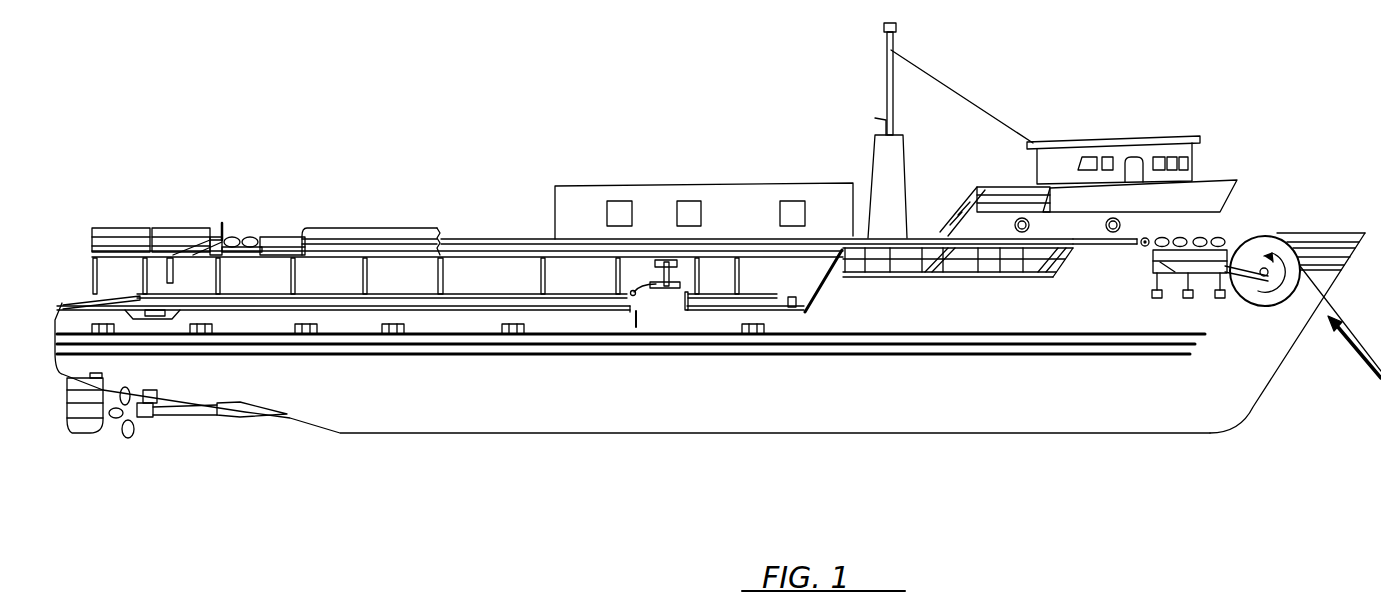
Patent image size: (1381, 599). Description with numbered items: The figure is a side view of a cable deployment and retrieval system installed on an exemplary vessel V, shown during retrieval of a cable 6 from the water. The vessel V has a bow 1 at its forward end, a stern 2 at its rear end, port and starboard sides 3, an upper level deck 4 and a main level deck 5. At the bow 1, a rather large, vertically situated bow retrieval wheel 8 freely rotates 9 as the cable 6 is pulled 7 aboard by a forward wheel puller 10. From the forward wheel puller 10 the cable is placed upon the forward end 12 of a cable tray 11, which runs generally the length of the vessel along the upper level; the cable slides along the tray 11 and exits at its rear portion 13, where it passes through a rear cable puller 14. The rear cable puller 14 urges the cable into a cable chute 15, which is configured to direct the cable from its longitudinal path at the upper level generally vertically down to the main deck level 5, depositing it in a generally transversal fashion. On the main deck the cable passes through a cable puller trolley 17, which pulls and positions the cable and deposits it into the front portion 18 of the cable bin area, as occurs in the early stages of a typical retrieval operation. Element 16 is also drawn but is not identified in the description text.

The vessel V is at (990, 398).
The bow 1 is at (1358, 247).
The stern 2 is at (57, 320).
The port and starboard sides 3 is at (1257, 365).
The upper level deck 4 is at (135, 228).
The main level deck 5 is at (92, 303).
The cable 6 is at (1380, 382).
The pulling of cable 7 is at (1351, 369).
The bow retrieval wheel 8 is at (1300, 240).
The free rotation 9 is at (1265, 271).
The forward wheel puller 10 is at (1203, 228).
The cable tray 11 is at (488, 235).
The forward end of cable tray 12 is at (1073, 242).
The rear portion of cable tray 13 is at (280, 228).
The rear cable puller 14 is at (242, 230).
The cable chute 15 is at (212, 237).
The pipe 16 is at (640, 318).
The cable puller trolley 17 is at (667, 293).
The front portion of cable bin area 18 is at (790, 277).